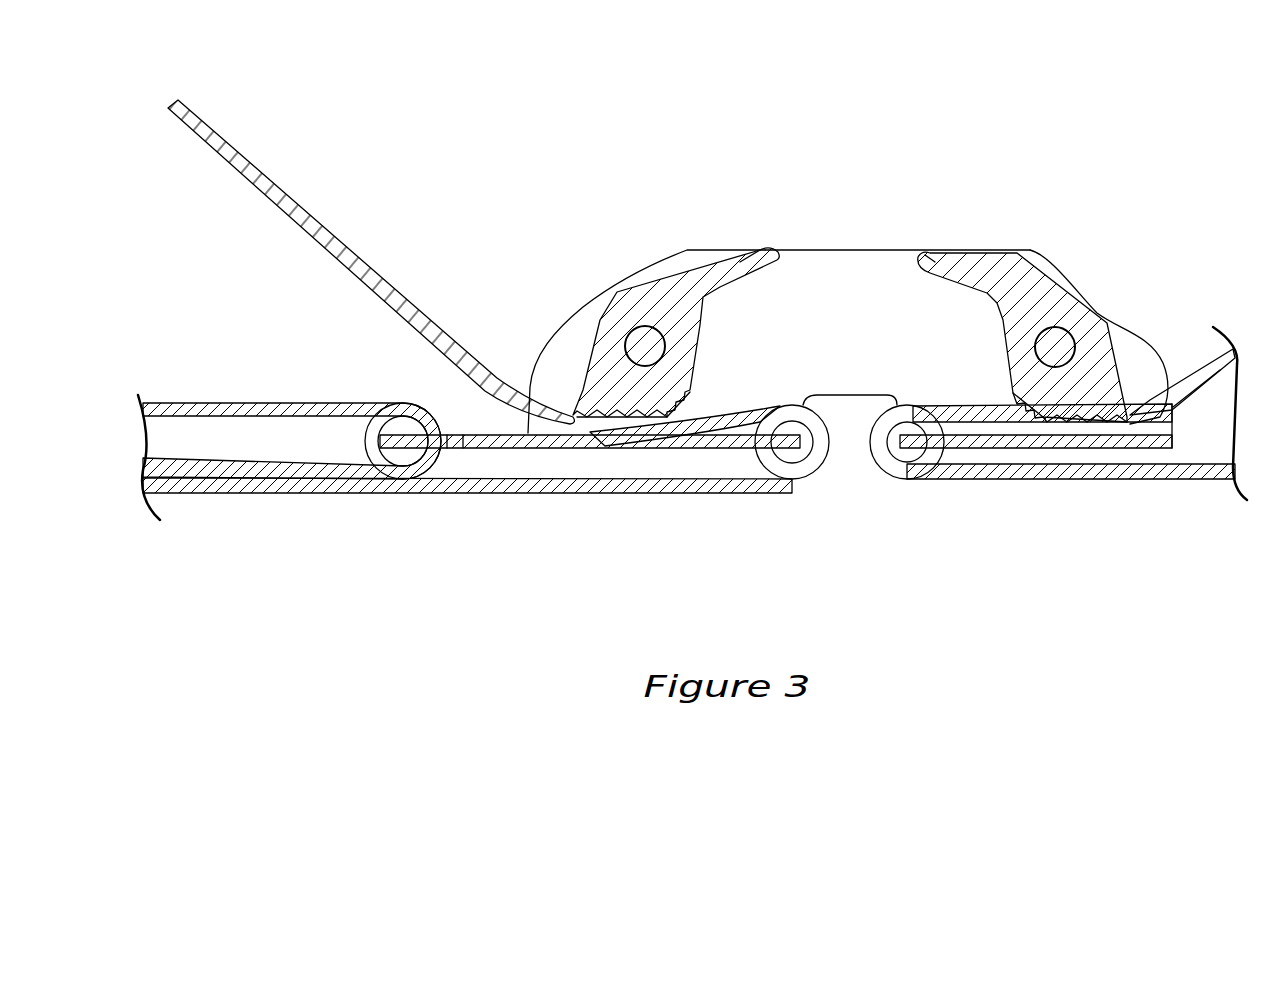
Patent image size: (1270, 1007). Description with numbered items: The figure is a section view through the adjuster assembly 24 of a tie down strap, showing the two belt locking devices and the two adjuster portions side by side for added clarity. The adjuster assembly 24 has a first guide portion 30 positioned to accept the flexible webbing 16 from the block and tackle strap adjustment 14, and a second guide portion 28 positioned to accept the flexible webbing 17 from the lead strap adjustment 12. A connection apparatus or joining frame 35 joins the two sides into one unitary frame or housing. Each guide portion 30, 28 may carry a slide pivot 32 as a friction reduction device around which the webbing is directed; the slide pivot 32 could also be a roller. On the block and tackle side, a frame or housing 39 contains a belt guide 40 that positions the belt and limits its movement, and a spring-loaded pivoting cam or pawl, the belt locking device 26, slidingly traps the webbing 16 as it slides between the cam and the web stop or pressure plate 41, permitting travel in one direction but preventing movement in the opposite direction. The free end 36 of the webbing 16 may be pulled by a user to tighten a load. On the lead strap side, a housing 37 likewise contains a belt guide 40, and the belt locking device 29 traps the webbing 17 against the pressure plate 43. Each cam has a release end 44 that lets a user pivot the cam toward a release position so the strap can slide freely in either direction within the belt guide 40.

The lead strap adjustment 12 is at (1199, 280).
The block and tackle strap adjustment 14 is at (371, 180).
The flexible webbing 16 is at (247, 410).
The flexible webbing 17 is at (1168, 473).
The adjuster assembly 24 is at (846, 140).
The belt locking device 26 is at (668, 305).
The second guide portion 28 is at (853, 455).
The belt locking device 29 is at (1033, 325).
The first guide portion 30 is at (452, 442).
The slide pivot 32 is at (402, 447).
The joining frame 35 is at (838, 310).
The free end 36 is at (233, 163).
The housing 37 is at (1135, 375).
The housing 39 is at (563, 360).
The belt guide 40 is at (617, 430).
The pressure plate 41 is at (557, 443).
The pressure plate 43 is at (1125, 447).
The release end 44 is at (733, 272).